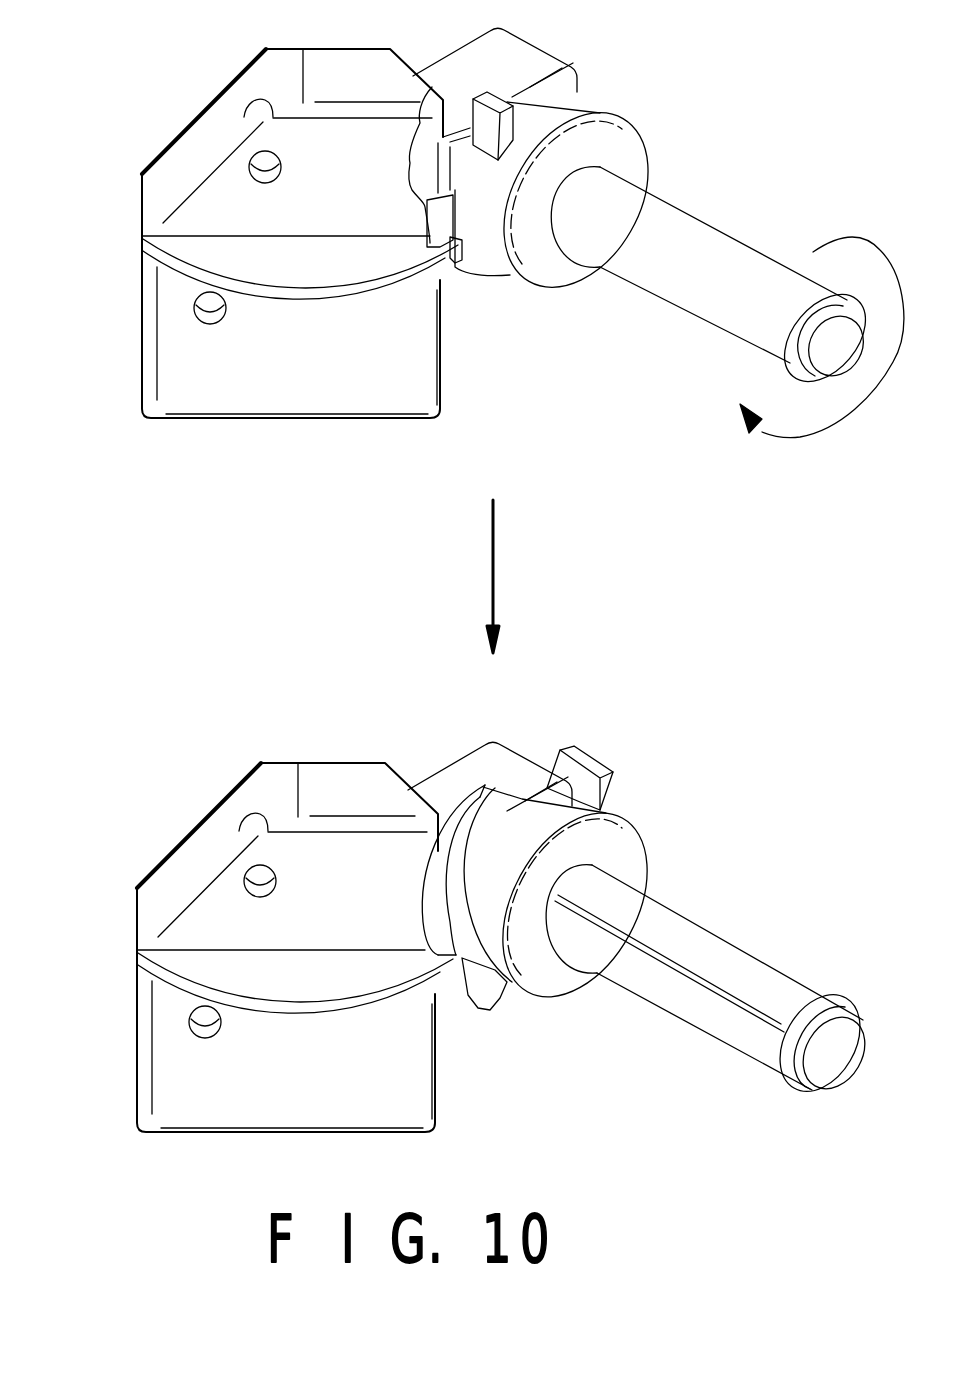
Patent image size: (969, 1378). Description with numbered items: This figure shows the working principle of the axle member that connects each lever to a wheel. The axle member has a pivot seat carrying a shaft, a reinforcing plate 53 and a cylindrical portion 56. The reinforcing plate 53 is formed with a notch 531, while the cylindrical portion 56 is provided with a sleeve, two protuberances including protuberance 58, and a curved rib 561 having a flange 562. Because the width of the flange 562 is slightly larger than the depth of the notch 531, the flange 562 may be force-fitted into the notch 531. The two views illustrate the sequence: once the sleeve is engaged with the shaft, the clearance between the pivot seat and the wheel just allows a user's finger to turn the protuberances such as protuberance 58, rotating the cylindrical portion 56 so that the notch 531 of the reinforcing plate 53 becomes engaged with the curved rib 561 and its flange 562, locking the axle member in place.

The reinforcing plate 53 is at (197, 255).
The notch 531 is at (457, 275).
The cylindrical portion 56 is at (587, 116).
The curved rib 561 is at (430, 87).
The flange 562 is at (457, 852).
The protuberance 58 is at (473, 1003).